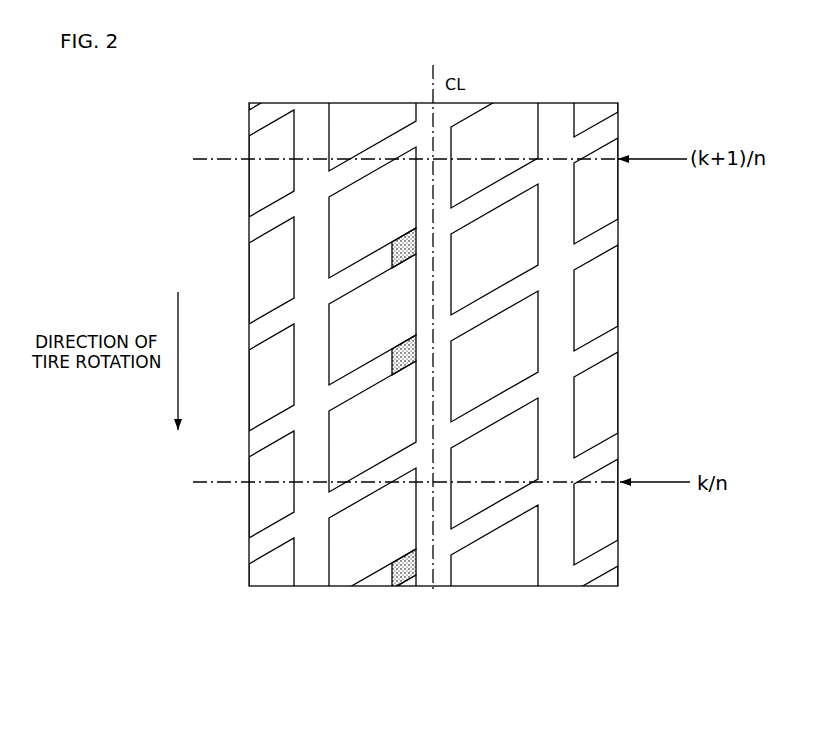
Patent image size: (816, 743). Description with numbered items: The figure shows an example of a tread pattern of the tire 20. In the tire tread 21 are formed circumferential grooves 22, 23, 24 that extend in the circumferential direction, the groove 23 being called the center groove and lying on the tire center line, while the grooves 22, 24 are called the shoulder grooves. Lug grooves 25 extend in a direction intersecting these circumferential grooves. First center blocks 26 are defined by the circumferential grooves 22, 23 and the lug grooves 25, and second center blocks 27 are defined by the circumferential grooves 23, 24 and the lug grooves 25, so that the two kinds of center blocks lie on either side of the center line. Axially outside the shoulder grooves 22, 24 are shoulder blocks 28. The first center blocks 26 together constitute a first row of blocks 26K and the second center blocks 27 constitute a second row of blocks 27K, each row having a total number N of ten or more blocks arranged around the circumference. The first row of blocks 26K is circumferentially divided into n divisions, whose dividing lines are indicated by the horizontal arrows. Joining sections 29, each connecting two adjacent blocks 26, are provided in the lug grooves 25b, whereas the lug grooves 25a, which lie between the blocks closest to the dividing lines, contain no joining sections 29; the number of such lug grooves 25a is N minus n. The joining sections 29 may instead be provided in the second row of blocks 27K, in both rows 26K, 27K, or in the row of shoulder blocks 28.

The tire 20 is at (622, 310).
The tire tread 21 is at (607, 450).
The circumferential groove 22 is at (315, 570).
The circumferential groove 23 is at (427, 570).
The circumferential groove 24 is at (561, 570).
The lug grooves 25 is at (285, 216).
The lug grooves 25a is at (282, 537).
The lug grooves 25b is at (590, 140).
The first center block 26 is at (345, 205).
The second center block 27 is at (510, 215).
The shoulder blocks 28 is at (278, 148).
The joining sections 29 is at (390, 255).
The first row of blocks 26K is at (364, 590).
The second row of blocks 27K is at (502, 590).